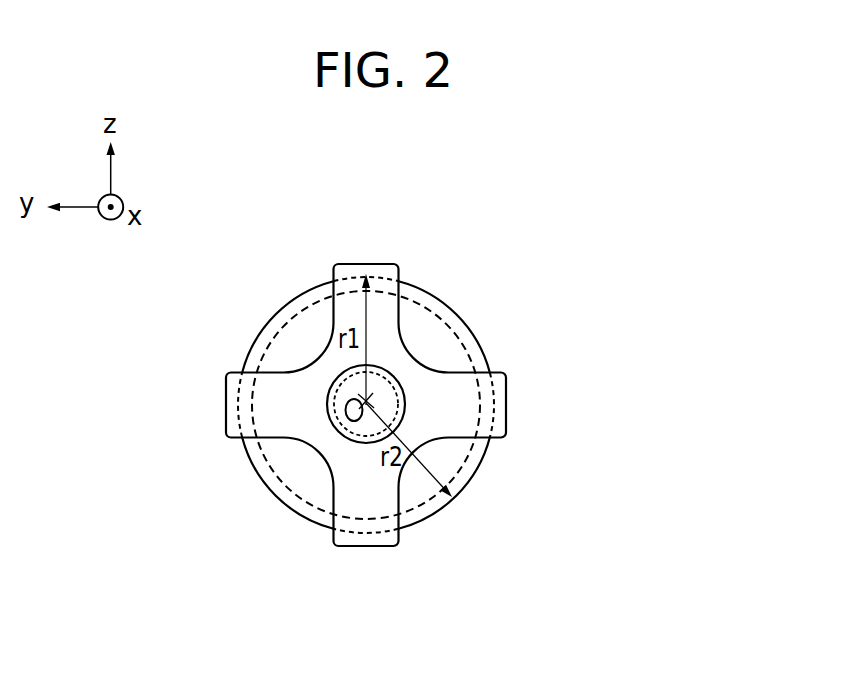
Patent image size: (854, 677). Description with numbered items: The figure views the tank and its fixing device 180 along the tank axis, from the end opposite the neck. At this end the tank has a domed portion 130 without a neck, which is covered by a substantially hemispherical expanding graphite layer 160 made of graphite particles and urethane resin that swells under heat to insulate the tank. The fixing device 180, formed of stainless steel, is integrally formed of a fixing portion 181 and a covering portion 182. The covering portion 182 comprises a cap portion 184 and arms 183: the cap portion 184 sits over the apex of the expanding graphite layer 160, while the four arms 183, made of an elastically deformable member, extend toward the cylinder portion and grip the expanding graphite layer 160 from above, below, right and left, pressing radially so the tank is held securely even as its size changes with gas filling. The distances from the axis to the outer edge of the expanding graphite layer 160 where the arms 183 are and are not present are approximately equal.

The domed portion 130 is at (297, 334).
The expanding graphite layer 160 is at (464, 318).
The fixing device 180 is at (484, 405).
The fixing portion 181 is at (403, 380).
The covering portion 182 is at (446, 405).
The arms 183 is at (480, 404).
The cap portion 184 is at (420, 412).